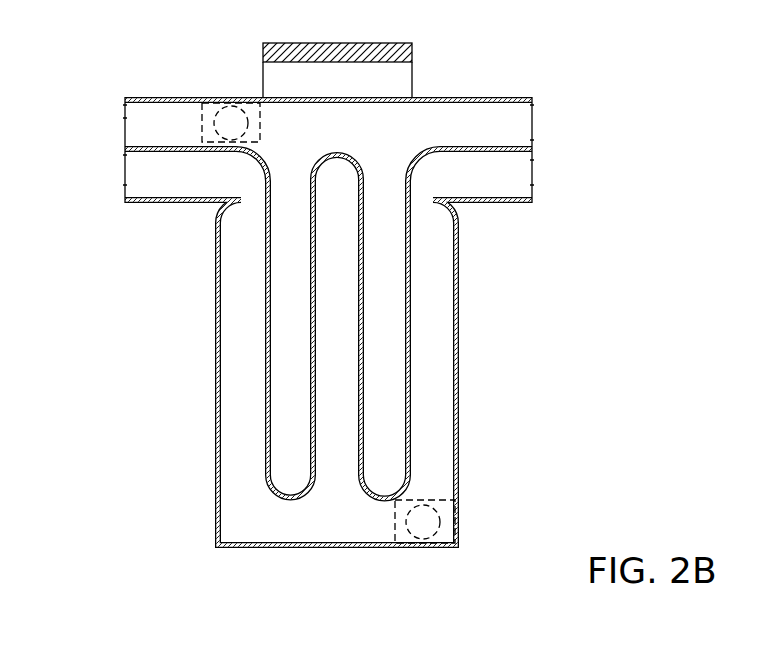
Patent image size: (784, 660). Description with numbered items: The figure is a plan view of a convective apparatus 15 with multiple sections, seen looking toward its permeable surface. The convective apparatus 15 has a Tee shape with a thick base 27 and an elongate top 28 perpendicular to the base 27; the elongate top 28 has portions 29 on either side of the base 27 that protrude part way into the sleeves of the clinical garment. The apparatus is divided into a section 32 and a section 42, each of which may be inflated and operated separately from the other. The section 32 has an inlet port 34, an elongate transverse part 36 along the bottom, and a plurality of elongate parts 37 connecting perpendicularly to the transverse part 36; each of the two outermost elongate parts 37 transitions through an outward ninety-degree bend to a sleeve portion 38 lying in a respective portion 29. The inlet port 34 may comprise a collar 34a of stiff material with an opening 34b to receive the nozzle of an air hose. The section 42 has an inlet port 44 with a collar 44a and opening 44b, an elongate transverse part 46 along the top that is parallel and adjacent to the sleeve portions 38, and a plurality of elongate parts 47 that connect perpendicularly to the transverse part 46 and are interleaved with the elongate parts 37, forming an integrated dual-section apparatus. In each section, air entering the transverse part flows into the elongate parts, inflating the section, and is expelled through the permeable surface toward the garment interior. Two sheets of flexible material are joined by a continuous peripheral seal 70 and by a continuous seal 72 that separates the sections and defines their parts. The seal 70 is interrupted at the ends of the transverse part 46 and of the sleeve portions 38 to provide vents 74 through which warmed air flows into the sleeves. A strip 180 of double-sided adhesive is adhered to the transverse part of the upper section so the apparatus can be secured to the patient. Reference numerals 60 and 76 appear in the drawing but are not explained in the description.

The convective apparatus 15 is at (563, 273).
The base 27 is at (458, 413).
The elongate top 28 is at (325, 134).
The portions 29 is at (160, 97).
The section 32 is at (215, 432).
The inlet port 34 is at (395, 533).
The collar 34a is at (452, 528).
The opening 34b is at (428, 517).
The elongate transverse part 36 is at (287, 525).
The elongate parts 37 is at (230, 289).
The sleeve portion 38 is at (198, 190).
The section 42 is at (442, 97).
The inlet port 44 is at (186, 97).
The collar 44a is at (213, 97).
The opening 44b is at (232, 118).
The elongate transverse part 46 is at (468, 122).
The elongate parts 47 is at (279, 325).
The lower corner 60 is at (215, 487).
The seal 70 is at (215, 287).
The seal 72 is at (267, 167).
The vents 74 is at (125, 98).
The lower side opening 76 is at (125, 200).
The strip 180 is at (412, 72).